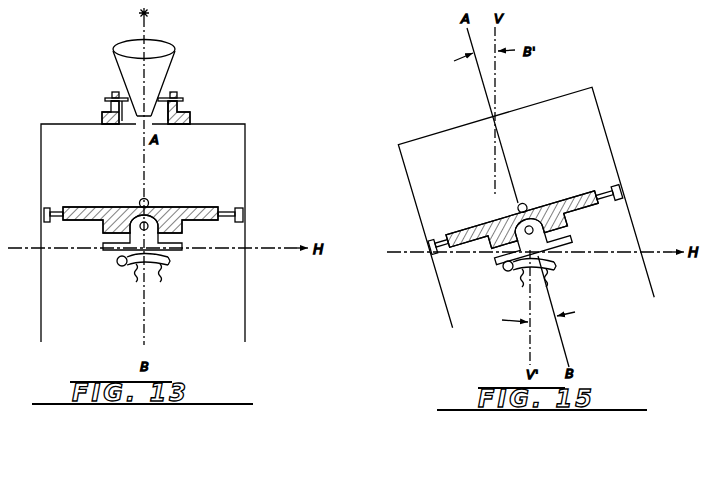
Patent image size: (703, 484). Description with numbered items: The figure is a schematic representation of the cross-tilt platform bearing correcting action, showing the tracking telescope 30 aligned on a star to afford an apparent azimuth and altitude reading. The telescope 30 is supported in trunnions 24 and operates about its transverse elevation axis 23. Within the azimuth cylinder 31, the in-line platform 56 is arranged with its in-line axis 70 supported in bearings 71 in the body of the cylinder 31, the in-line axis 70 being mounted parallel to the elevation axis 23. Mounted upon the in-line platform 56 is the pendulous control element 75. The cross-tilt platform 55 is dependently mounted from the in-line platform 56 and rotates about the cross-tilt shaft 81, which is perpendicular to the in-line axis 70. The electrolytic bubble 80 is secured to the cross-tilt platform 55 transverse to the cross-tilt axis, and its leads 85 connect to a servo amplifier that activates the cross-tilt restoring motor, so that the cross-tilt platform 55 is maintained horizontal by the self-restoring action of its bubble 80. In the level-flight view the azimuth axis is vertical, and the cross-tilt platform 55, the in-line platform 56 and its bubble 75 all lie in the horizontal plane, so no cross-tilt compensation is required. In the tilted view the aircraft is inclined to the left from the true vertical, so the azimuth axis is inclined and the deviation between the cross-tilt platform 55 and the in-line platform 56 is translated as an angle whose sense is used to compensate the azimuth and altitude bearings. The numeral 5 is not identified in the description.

In FIG. 13, the light source point 5 is at (152, 13).
In FIG. 13, the telescope 30 is at (166, 50).
In FIG. 13, the elevation axis 23 is at (110, 98).
In FIG. 13, the trunnions 24 is at (109, 107).
In FIG. 13, the azimuth cylinder 31 is at (246, 179).
In FIG. 15, the azimuth cylinder 31 is at (609, 141).
In FIG. 13, the in-line platform 56 is at (140, 206).
In FIG. 15, the in-line platform 56 is at (558, 200).
In FIG. 13, the bearings 71 is at (143, 198).
In FIG. 15, the bearings 71 is at (430, 238).
In FIG. 13, the in-line axis 70 is at (142, 199).
In FIG. 15, the in-line axis 70 is at (444, 240).
In FIG. 13, the pendulous control element 75 is at (160, 190).
In FIG. 15, the pendulous control element 75 is at (525, 203).
In FIG. 13, the cross-tilt shaft 81 is at (130, 202).
In FIG. 15, the cross-tilt shaft 81 is at (538, 231).
In FIG. 13, the cross-tilt platform 55 is at (162, 262).
In FIG. 15, the cross-tilt platform 55 is at (566, 257).
In FIG. 13, the electrolytic bubble 80 is at (135, 279).
In FIG. 15, the electrolytic bubble 80 is at (504, 270).
In FIG. 15, the leads 85 is at (551, 316).